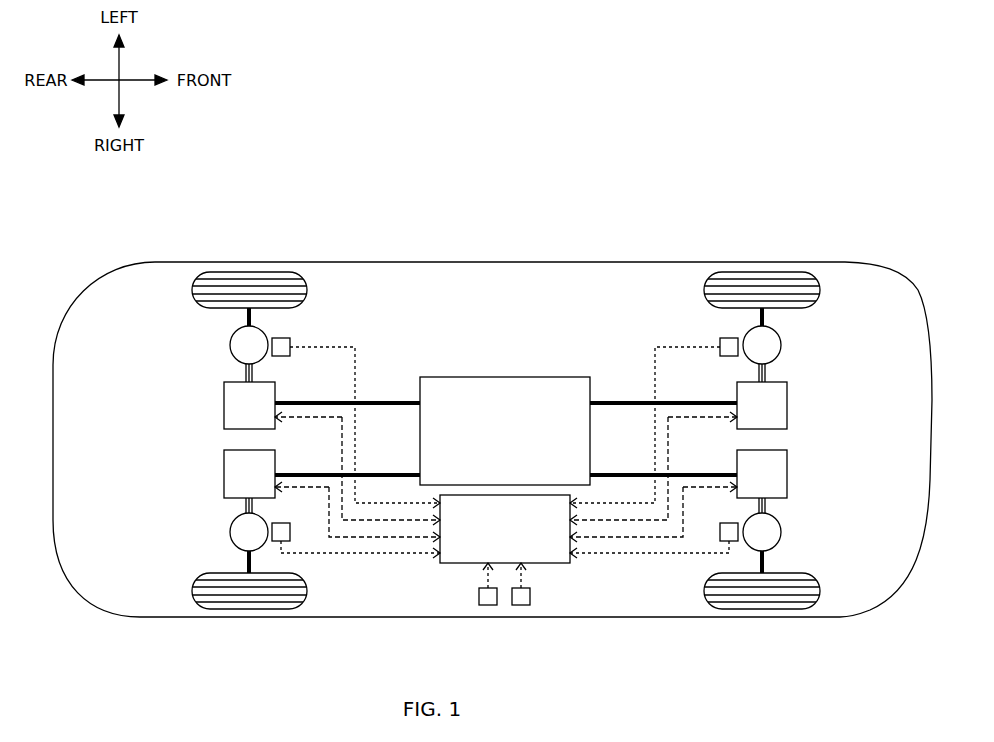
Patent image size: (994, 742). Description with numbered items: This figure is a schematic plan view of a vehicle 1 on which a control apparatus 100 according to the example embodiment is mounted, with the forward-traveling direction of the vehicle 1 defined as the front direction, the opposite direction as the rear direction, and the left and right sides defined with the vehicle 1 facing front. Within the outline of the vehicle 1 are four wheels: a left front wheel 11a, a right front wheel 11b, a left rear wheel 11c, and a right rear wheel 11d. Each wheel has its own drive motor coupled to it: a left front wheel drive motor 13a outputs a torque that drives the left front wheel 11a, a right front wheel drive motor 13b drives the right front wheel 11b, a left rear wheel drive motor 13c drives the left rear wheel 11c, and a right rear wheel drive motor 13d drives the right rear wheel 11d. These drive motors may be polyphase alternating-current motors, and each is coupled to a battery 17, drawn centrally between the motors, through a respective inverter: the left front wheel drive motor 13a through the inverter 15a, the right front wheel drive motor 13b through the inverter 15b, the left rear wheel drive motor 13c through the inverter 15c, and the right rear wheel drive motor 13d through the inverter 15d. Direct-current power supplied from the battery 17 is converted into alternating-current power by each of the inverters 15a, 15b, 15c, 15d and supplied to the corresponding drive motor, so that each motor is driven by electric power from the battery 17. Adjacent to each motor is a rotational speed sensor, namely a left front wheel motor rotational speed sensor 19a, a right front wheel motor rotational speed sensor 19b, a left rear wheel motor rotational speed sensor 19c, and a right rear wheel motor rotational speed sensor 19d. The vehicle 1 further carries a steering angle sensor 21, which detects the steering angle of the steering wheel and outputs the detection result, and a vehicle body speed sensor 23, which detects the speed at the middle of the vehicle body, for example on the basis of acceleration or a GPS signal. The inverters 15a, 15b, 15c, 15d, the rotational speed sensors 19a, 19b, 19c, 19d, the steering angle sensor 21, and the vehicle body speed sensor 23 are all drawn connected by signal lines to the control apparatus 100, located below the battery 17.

The vehicle 1 is at (840, 112).
The left front wheel 11a is at (757, 272).
The right front wheel 11b is at (762, 612).
The left rear wheel 11c is at (245, 272).
The right rear wheel 11d is at (250, 612).
The left front wheel drive motor 13a is at (782, 345).
The right front wheel drive motor 13b is at (782, 532).
The left rear wheel drive motor 13c is at (229, 345).
The right rear wheel drive motor 13d is at (229, 532).
The inverter 15a is at (787, 403).
The inverter 15b is at (787, 475).
The inverter 15c is at (224, 403).
The inverter 15d is at (224, 475).
The battery 17 is at (500, 377).
The left front wheel motor rotational speed sensor 19a is at (720, 340).
The right front wheel motor rotational speed sensor 19b is at (720, 542).
The left rear wheel motor rotational speed sensor 19c is at (291, 340).
The right rear wheel motor rotational speed sensor 19d is at (291, 542).
The steering angle sensor 21 is at (488, 606).
The vehicle body speed sensor 23 is at (521, 606).
The control apparatus 100 is at (556, 560).